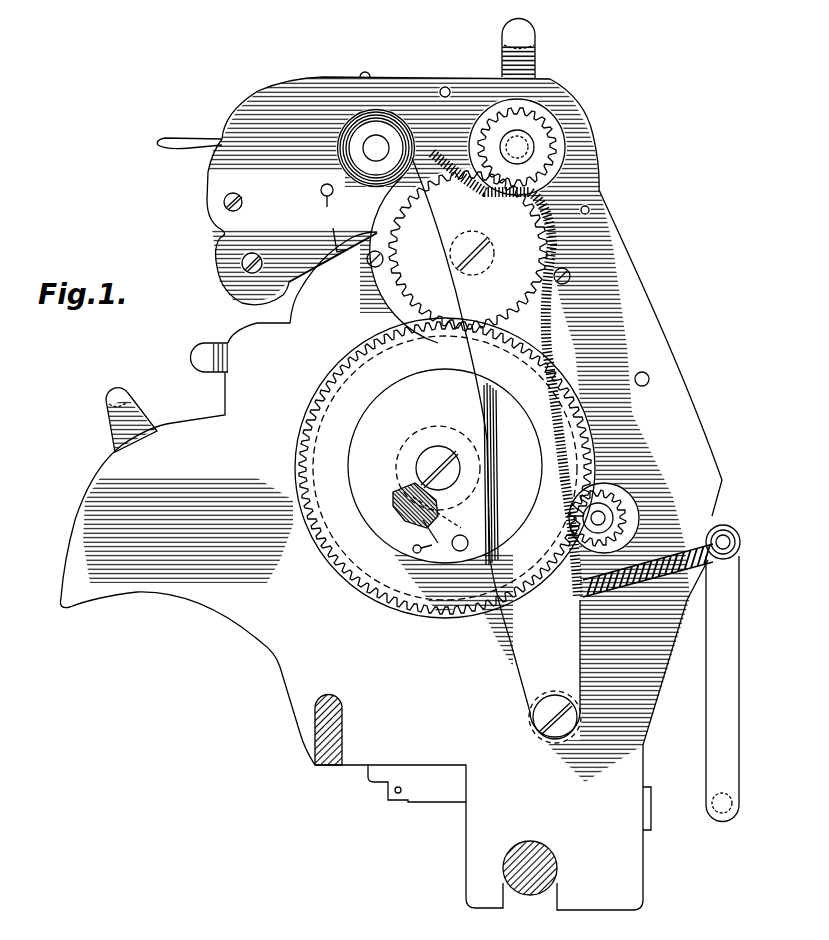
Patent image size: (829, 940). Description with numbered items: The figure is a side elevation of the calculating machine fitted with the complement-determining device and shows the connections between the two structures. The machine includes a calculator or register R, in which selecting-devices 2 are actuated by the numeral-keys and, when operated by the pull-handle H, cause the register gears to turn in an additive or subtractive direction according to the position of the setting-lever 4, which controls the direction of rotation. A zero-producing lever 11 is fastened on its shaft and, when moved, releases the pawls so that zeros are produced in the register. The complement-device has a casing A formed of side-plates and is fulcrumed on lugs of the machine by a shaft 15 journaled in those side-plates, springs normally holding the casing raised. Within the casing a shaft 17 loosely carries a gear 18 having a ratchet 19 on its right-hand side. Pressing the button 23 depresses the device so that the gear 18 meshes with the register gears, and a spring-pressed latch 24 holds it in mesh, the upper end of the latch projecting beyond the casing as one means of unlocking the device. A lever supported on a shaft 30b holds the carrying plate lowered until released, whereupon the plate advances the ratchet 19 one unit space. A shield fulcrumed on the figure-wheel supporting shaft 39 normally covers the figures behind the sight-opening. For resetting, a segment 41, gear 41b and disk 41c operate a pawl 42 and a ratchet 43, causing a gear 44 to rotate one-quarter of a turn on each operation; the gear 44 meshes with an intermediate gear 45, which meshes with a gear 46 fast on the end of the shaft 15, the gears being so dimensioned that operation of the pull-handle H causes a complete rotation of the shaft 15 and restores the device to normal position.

The selecting-devices 2 is at (417, 783).
The setting-lever 4 is at (138, 410).
The zero-producing lever 11 is at (191, 356).
The shaft 15 is at (522, 143).
The shaft 17 is at (336, 205).
The gear 18 is at (338, 252).
The ratchet 19 is at (537, 46).
The button 23 is at (192, 142).
The spring-pressed latch 24 is at (368, 76).
The shaft 30b is at (241, 207).
The figure-wheel supporting shaft 39 is at (216, 258).
The segment 41 is at (445, 569).
The gear 41b is at (522, 414).
The disk 41c is at (365, 466).
The pawl 42 is at (410, 506).
The ratchet 43 is at (443, 416).
The gear 44 is at (470, 348).
The intermediate gear 45 is at (468, 250).
The gear 46 is at (553, 150).
The casing A is at (292, 198).
The pull-handle H is at (496, 448).
The register R is at (647, 741).